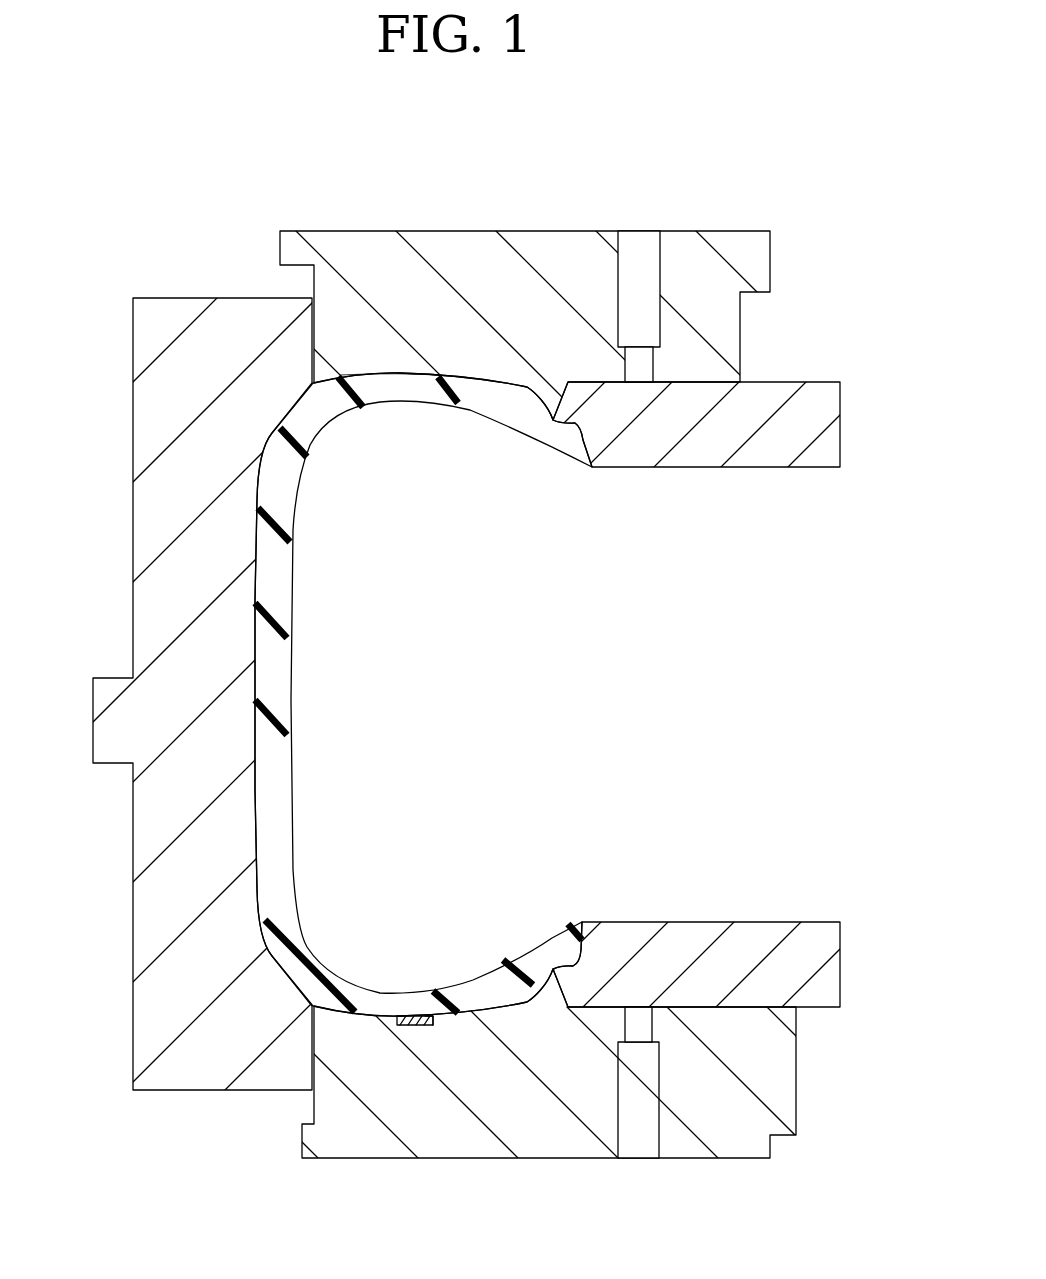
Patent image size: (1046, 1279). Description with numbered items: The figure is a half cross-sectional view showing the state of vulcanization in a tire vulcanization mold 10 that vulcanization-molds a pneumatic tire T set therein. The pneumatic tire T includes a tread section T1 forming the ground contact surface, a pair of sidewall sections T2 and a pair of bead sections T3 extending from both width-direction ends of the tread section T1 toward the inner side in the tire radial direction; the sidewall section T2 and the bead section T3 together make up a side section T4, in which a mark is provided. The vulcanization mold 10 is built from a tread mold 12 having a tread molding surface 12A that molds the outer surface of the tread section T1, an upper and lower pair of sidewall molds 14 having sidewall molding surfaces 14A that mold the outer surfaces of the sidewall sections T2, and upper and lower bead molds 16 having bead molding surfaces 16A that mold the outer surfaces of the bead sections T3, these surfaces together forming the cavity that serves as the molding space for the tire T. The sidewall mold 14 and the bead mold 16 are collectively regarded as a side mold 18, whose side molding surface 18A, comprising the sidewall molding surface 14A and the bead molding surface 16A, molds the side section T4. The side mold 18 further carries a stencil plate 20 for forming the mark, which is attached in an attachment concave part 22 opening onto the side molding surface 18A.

The tire vulcanization mold 10 is at (480, 150).
The tread mold 12 is at (148, 820).
The tread molding surface 12A is at (258, 743).
The sidewall mold 14 is at (376, 246).
The sidewall molding surface 14A is at (393, 374).
The bead mold 16 is at (822, 398).
The bead molding surface 16A is at (562, 422).
The side mold 18 is at (678, 853).
The side molding surface 18A is at (462, 1008).
The stencil plate 20 is at (432, 1027).
The attachment concave part 22 is at (410, 1027).
The pneumatic tire T is at (255, 543).
The tread section T1 is at (292, 650).
The sidewall section T2 is at (445, 405).
The bead section T3 is at (568, 462).
The side section T4 is at (447, 880).